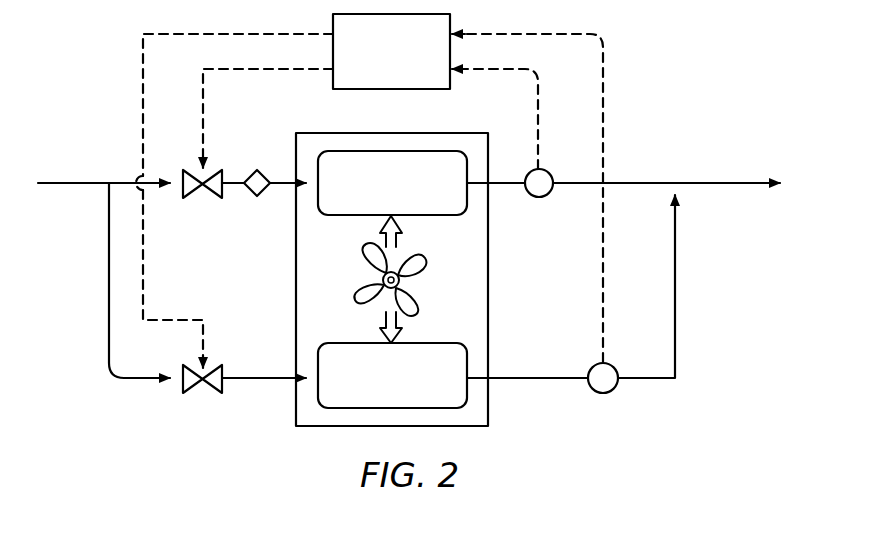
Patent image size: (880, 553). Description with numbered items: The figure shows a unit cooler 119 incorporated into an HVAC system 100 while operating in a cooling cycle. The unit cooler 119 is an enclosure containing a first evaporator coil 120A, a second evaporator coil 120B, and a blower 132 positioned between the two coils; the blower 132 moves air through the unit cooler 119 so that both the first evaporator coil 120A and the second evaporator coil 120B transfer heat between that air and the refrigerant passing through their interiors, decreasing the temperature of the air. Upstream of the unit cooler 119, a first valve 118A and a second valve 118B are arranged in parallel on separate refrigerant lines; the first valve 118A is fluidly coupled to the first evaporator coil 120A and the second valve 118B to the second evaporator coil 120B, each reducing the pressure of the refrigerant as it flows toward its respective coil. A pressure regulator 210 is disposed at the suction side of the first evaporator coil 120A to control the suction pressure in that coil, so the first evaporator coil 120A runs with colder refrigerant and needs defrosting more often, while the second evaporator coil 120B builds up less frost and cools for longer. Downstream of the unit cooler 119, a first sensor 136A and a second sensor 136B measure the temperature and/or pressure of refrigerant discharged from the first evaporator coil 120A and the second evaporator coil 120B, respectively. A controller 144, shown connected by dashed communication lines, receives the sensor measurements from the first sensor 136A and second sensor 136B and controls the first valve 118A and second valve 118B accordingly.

The HVAC system 100 is at (665, 53).
The first valve 118A is at (222, 170).
The second valve 118B is at (186, 390).
The unit cooler 119 is at (478, 428).
The first evaporator coil 120A is at (392, 183).
The second evaporator coil 120B is at (392, 375).
The blower 132 is at (363, 269).
The first sensor 136A is at (539, 197).
The second sensor 136B is at (612, 390).
The controller 144 is at (391, 51).
The pressure regulator 210 is at (257, 196).